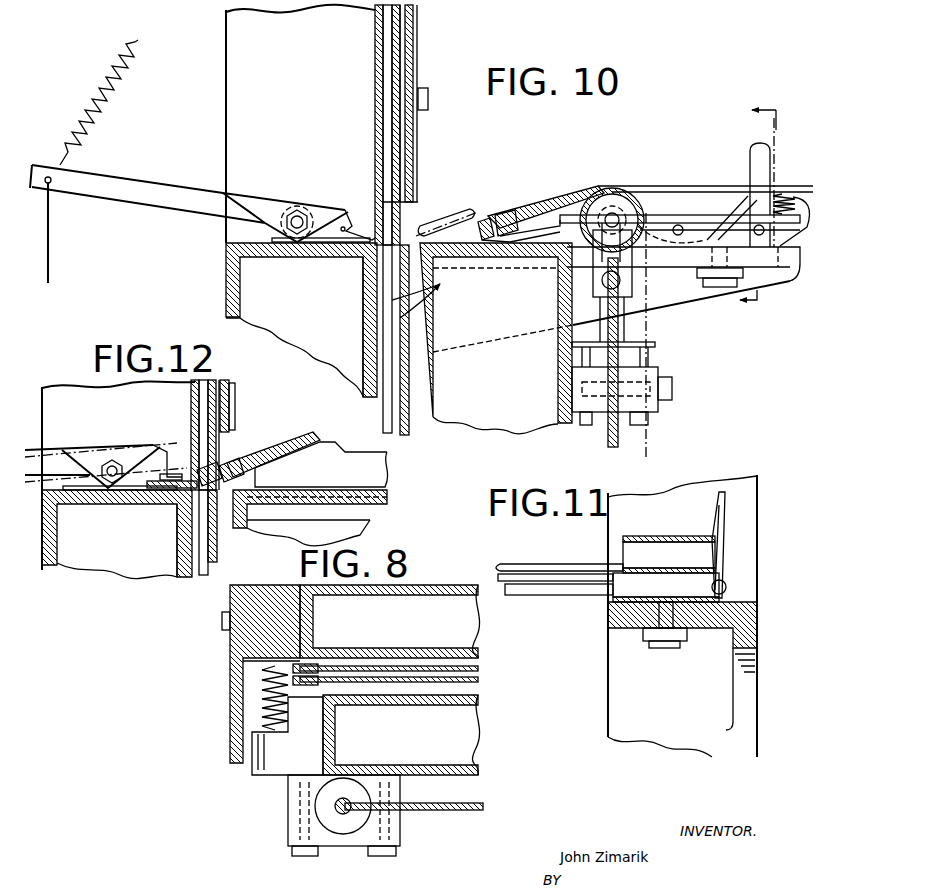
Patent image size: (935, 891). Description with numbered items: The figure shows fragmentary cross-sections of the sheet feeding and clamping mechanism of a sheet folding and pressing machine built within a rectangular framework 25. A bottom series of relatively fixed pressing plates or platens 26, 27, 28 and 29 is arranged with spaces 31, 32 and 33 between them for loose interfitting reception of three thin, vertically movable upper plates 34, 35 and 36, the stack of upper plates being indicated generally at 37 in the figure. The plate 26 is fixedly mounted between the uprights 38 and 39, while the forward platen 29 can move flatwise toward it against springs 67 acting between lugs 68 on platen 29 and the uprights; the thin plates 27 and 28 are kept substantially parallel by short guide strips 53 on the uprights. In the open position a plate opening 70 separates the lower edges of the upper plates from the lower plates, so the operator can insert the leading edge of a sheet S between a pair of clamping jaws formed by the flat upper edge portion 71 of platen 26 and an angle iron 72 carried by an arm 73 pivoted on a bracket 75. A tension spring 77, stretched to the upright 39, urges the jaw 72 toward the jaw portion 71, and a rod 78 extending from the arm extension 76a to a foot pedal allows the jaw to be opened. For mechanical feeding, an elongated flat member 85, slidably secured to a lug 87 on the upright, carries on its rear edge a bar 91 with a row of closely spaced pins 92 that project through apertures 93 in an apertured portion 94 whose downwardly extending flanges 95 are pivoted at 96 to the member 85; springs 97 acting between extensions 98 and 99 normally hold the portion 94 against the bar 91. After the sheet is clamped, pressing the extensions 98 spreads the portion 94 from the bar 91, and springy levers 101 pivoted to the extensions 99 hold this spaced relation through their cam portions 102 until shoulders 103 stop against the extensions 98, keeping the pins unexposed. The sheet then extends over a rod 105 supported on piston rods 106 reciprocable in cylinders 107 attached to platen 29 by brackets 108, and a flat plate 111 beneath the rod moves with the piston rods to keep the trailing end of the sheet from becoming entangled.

In FIG. 10, the framework 25 is at (224, 117).
In FIG. 12, the framework 25 is at (60, 386).
In FIG. 8, the framework 25 is at (228, 638).
In FIG. 11, the framework 25 is at (762, 542).
In FIG. 10, the pressing plate 26 is at (368, 345).
In FIG. 12, the pressing plate 26 is at (185, 560).
In FIG. 8, the pressing plate 26 is at (477, 646).
In FIG. 10, the pressing plate 27 is at (385, 396).
In FIG. 12, the pressing plate 27 is at (200, 522).
In FIG. 8, the pressing plate 27 is at (477, 669).
In FIG. 10, the pressing plate 28 is at (412, 426).
In FIG. 12, the pressing plate 28 is at (213, 553).
In FIG. 8, the pressing plate 28 is at (477, 680).
In FIG. 10, the pressing plate 29 is at (438, 393).
In FIG. 12, the pressing plate 29 is at (240, 530).
In FIG. 8, the pressing plate 29 is at (477, 712).
In FIG. 10, the space 31 is at (385, 350).
In FIG. 10, the space 32 is at (410, 342).
In FIG. 10, the space 33 is at (420, 366).
In FIG. 10, the upper plate 34 is at (378, 116).
In FIG. 12, the upper plate 34 is at (195, 380).
In FIG. 10, the upper plate 35 is at (390, 140).
In FIG. 12, the upper plate 35 is at (204, 380).
In FIG. 10, the upper plate 36 is at (408, 160).
In FIG. 12, the upper plate 36 is at (214, 386).
In FIG. 10, the strip stack 37 is at (410, 36).
In FIG. 12, the strip stack 37 is at (208, 420).
In FIG. 8, the upright 38 is at (230, 602).
In FIG. 10, the upright 39 is at (240, 31).
In FIG. 11, the upright 39 is at (618, 660).
In FIG. 10, the guide strips 53 is at (425, 295).
In FIG. 8, the guide strips 53 is at (305, 678).
In FIG. 8, the springs 67 is at (262, 694).
In FIG. 8, the lugs 68 is at (272, 766).
In FIG. 10, the plate opening 70 is at (420, 230).
In FIG. 12, the plate opening 70 is at (160, 456).
In FIG. 10, the upper edge portion 71 is at (362, 258).
In FIG. 12, the upper edge portion 71 is at (170, 502).
In FIG. 10, the angle iron 72 is at (370, 238).
In FIG. 12, the angle iron 72 is at (165, 483).
In FIG. 10, the arm 73 is at (322, 214).
In FIG. 12, the arm 73 is at (110, 458).
In FIG. 10, the bracket 75 is at (278, 240).
In FIG. 12, the bracket 75 is at (123, 500).
In FIG. 10, the arm extension 76a is at (48, 165).
In FIG. 12, the arm extension 76a is at (60, 450).
In FIG. 10, the tension spring 77 is at (118, 88).
In FIG. 10, the rod 78 is at (52, 250).
In FIG. 10, the member 85 is at (668, 219).
In FIG. 11, the member 85 is at (668, 580).
In FIG. 10, the lug 87 is at (692, 292).
In FIG. 11, the lug 87 is at (760, 620).
In FIG. 10, the bar 91 is at (486, 232).
In FIG. 12, the bar 91 is at (308, 515).
In FIG. 11, the bar 91 is at (590, 597).
In FIG. 10, the pins 92 is at (508, 222).
In FIG. 12, the pins 92 is at (220, 462).
In FIG. 10, the apertures 93 is at (486, 221).
In FIG. 10, the apertured portion 94 is at (480, 218).
In FIG. 12, the apertured portion 94 is at (258, 462).
In FIG. 11, the apertured portion 94 is at (582, 563).
In FIG. 10, the flanges 95 is at (730, 212).
In FIG. 10, the pivot 96 is at (682, 228).
In FIG. 10, the springs 97 is at (798, 222).
In FIG. 10, the extension 98 is at (790, 195).
In FIG. 11, the extension 98 is at (688, 536).
In FIG. 10, the extension 99 is at (683, 267).
In FIG. 10, the lever 101 is at (756, 148).
In FIG. 11, the lever 101 is at (730, 516).
In FIG. 10, the cam portion 102 is at (776, 166).
In FIG. 11, the cam portion 102 is at (728, 548).
In FIG. 10, the shoulder 103 is at (753, 230).
In FIG. 11, the shoulder 103 is at (669, 557).
In FIG. 10, the rod 105 is at (626, 196).
In FIG. 10, the piston rod 106 is at (633, 260).
In FIG. 8, the piston rod 106 is at (356, 790).
In FIG. 10, the cylinder 107 is at (655, 346).
In FIG. 8, the cylinder 107 is at (330, 810).
In FIG. 10, the bracket 108 is at (655, 410).
In FIG. 8, the bracket 108 is at (365, 846).
In FIG. 10, the flat plate 111 is at (608, 446).
In FIG. 8, the flat plate 111 is at (450, 803).
In FIG. 10, the sheet S is at (455, 213).
In FIG. 12, the sheet S is at (235, 456).